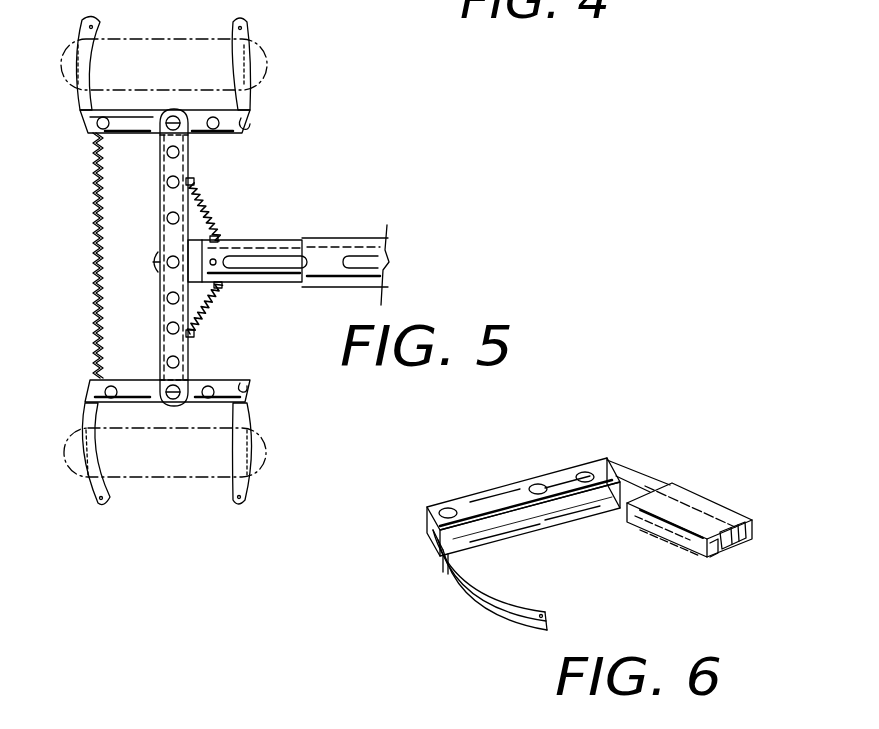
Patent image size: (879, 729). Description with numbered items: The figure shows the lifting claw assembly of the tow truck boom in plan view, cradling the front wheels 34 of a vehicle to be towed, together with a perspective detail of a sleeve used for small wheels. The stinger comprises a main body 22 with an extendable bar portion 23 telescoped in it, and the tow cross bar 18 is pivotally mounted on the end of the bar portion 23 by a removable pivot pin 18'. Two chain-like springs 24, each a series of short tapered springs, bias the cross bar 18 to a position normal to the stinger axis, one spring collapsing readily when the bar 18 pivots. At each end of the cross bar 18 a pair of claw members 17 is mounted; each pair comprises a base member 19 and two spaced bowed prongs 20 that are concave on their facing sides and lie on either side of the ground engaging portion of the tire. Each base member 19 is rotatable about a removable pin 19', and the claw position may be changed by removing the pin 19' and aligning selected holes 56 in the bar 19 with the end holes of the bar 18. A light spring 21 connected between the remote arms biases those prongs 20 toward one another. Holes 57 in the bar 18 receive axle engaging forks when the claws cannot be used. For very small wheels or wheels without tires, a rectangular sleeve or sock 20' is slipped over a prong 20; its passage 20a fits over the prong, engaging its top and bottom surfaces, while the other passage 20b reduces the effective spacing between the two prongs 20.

In FIG. 5, the pair of claw members 17 is at (178, 30).
In FIG. 6, the pair of claw members 17 is at (602, 578).
In FIG. 5, the tow cross bar 18 is at (147, 257).
In FIG. 5, the removable pivot pin 18' is at (134, 249).
In FIG. 5, the base member 19 is at (165, 256).
In FIG. 6, the base member 19 is at (523, 497).
In FIG. 5, the removable pin 19' is at (181, 258).
In FIG. 5, the claw prongs 20 is at (164, 261).
In FIG. 6, the claw prongs 20 is at (574, 548).
In FIG. 6, the sleeve or sock 20' is at (704, 512).
In FIG. 6, the tubular passage 20a is at (729, 549).
In FIG. 6, the tubular passage 20b is at (709, 557).
In FIG. 5, the light spring 21 is at (97, 248).
In FIG. 5, the main body 22 is at (338, 238).
In FIG. 5, the extendable bar portion 23 is at (283, 240).
In FIG. 5, the springs 24 is at (213, 215).
In FIG. 5, the front wheels 34 is at (268, 47).
In FIG. 5, the holes 56 is at (215, 133).
In FIG. 6, the holes 56 is at (540, 484).
In FIG. 5, the holes 57 is at (167, 184).